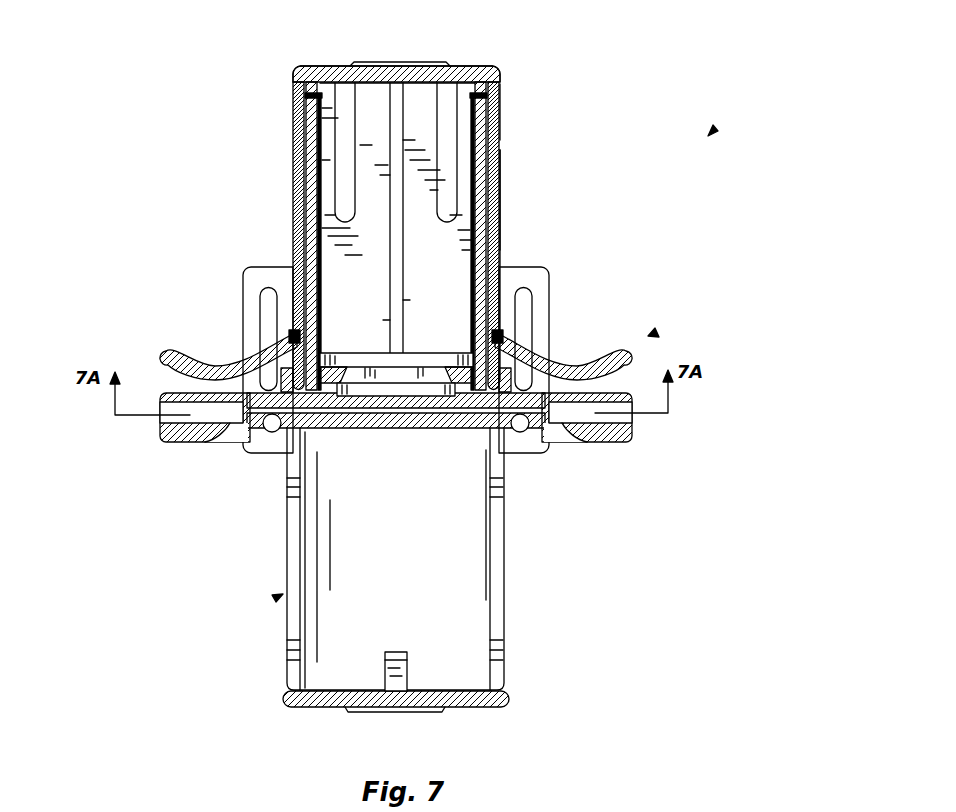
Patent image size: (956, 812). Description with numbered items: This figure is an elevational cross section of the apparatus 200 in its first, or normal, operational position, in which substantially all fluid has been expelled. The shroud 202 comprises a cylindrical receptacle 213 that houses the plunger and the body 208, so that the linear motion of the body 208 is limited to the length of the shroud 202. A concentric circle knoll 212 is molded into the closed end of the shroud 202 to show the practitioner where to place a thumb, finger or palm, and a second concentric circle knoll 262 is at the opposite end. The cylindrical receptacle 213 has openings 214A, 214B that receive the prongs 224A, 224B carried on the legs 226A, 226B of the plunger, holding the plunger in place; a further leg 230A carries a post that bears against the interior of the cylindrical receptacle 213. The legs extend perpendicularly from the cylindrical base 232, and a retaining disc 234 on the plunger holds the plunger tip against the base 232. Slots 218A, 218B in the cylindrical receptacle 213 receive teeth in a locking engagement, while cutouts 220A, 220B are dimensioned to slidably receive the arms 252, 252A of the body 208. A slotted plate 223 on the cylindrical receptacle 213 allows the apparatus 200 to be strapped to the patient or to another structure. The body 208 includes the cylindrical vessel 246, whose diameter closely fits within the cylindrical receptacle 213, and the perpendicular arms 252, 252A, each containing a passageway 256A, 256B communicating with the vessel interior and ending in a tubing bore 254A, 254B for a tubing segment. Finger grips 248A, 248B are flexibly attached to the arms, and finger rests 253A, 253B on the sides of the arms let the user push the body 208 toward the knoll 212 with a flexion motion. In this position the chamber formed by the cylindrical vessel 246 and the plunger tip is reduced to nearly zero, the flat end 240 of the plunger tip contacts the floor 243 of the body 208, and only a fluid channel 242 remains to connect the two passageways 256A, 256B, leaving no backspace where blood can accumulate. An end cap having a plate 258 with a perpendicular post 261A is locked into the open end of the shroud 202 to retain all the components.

The apparatus 200 is at (714, 132).
The shroud 202 is at (278, 597).
The body 208 is at (656, 333).
The concentric circle knoll 212 is at (400, 63).
The cylindrical receptacle 213 is at (501, 196).
The opening 214A is at (302, 93).
The opening 214B is at (490, 93).
The slot 218A is at (300, 329).
The slot 218B is at (494, 329).
The cutout 220A is at (298, 141).
The cutout 220B is at (502, 166).
The slotted plate 223 is at (256, 277).
The prong 224A is at (300, 80).
The prong 224B is at (493, 80).
The leg 226A is at (340, 233).
The leg 226B is at (455, 241).
The leg 230A is at (398, 233).
The cylindrical base 232 is at (433, 358).
The retaining disc 234 is at (385, 388).
The flat end 240 is at (432, 410).
The fluid channel 242 is at (484, 429).
The floor 243 is at (330, 409).
The cylindrical vessel 246 is at (501, 131).
The finger grip 248A is at (207, 352).
The finger grip 248B is at (580, 364).
The arm 252 is at (612, 392).
The arm 252A is at (182, 392).
The first finger rest 253A is at (242, 438).
The second finger rest 253B is at (576, 428).
The tubing bore 254A is at (196, 431).
The tubing bore 254B is at (625, 416).
The passageway 256A is at (258, 440).
The passageway 256B is at (540, 429).
The plate 258 is at (488, 709).
The post 261A is at (408, 666).
The concentric circle knoll 262 is at (400, 711).